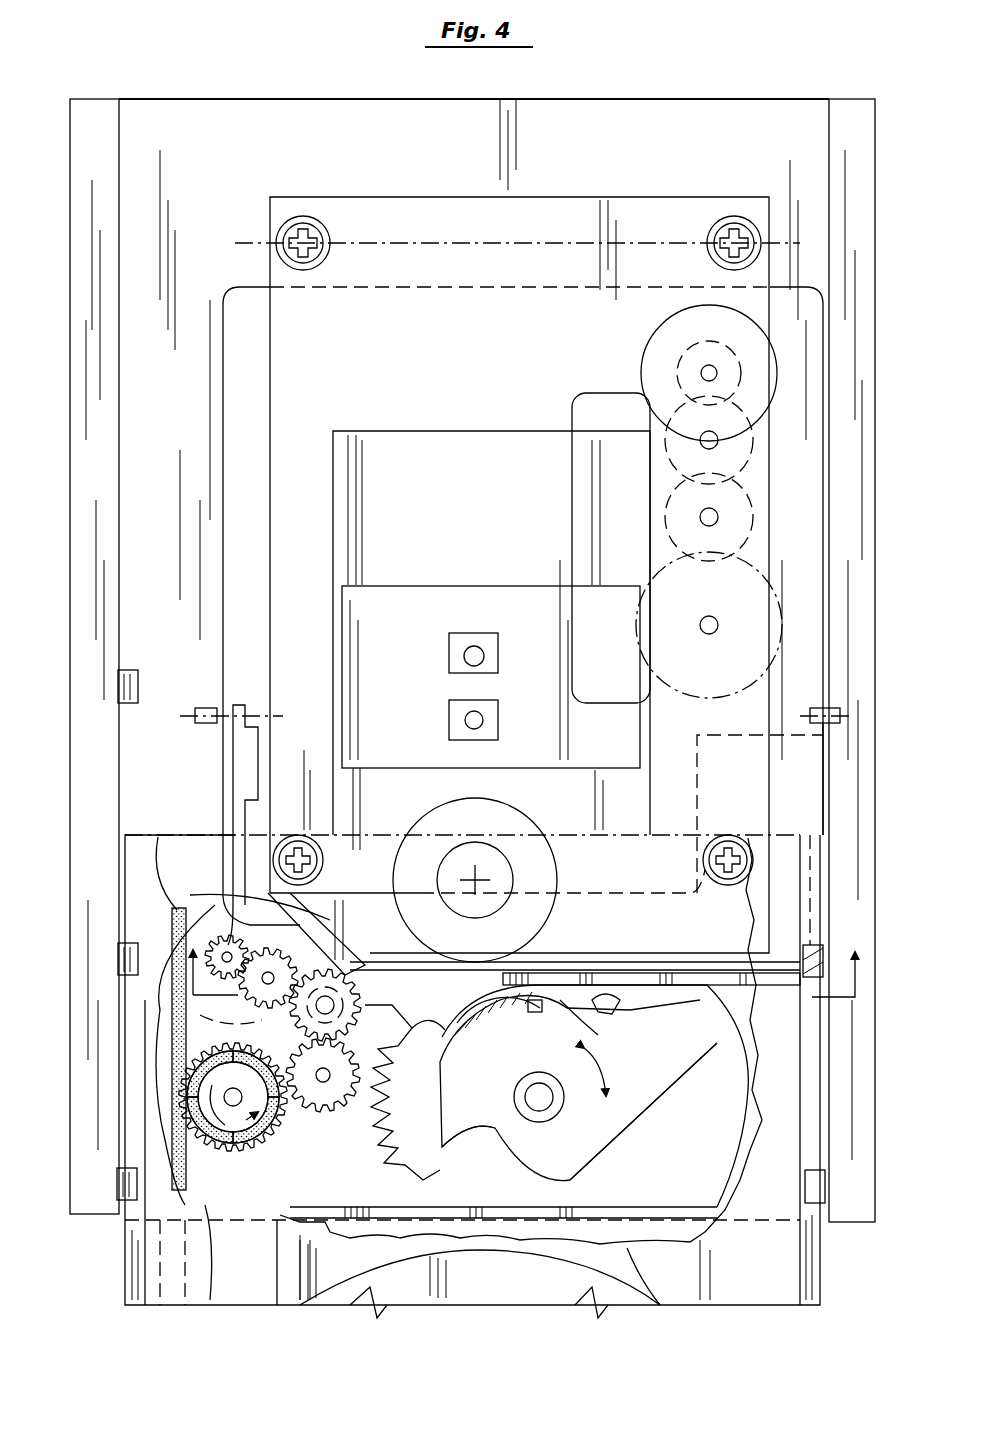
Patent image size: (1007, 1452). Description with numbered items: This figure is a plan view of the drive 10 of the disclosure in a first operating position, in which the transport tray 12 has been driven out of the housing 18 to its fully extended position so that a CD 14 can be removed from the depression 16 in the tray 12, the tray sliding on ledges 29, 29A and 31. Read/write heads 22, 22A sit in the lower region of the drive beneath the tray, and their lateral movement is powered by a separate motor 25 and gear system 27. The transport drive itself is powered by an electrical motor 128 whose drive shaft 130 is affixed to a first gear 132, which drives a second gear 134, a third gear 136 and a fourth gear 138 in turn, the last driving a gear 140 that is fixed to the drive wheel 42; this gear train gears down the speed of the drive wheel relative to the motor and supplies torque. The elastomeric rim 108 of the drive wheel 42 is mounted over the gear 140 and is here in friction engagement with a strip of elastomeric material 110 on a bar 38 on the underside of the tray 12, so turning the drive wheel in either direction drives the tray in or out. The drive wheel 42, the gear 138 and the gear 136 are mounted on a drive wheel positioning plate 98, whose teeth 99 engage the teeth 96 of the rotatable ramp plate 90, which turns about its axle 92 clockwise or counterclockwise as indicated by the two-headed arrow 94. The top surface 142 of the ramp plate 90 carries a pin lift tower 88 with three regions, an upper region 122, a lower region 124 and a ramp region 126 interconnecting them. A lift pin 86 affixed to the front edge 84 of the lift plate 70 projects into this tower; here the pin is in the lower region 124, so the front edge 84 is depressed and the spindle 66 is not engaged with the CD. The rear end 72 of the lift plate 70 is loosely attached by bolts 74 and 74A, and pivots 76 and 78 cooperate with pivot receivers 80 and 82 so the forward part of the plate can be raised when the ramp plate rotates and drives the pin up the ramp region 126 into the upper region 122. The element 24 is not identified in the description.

The drive 10 is at (655, 86).
The transport tray 12 is at (782, 1273).
The compact disk 14 is at (378, 1278).
The CD-shaped depression 16 is at (632, 1292).
The housing 18 is at (96, 140).
The read/write head 22 is at (477, 648).
The read/write head 22A is at (471, 722).
The lower frame 24 is at (125, 1262).
The motor 25 is at (668, 352).
The gear system 27 is at (556, 552).
The ledge 29 is at (119, 943).
The ledge 29A is at (132, 668).
The ledge 31 is at (822, 946).
The bar 38 is at (180, 1081).
The drive wheel 42 is at (222, 1086).
The CD spindle 66 is at (560, 880).
The lift plate 70 is at (420, 404).
The rear end of lift plate 72 is at (448, 197).
The bolt 74 is at (306, 216).
The bolt 74A is at (736, 216).
The pivot 76 is at (206, 708).
The pivot 78 is at (828, 724).
The pivot receiver 80 is at (206, 724).
The pivot receiver 82 is at (832, 708).
The front edge of lift plate 84 is at (560, 973).
The lift plate pin 86 is at (573, 1067).
The pin lift tower 88 is at (602, 1016).
The ramp plate 90 is at (666, 1098).
The axle 92 is at (546, 1110).
The two-headed direction arrow 94 is at (622, 1135).
The teeth 96 is at (382, 1148).
The drive wheel positioning plate 98 is at (361, 1000).
The teeth 99 is at (357, 1030).
The elastomeric rim 108 is at (216, 1152).
The strip of elastomeric material 110 is at (206, 1206).
The upper region 122 is at (448, 1042).
The lower region 124 is at (592, 1040).
The ramp region 126 is at (516, 1030).
The electrical motor 128 is at (190, 1030).
The drive shaft 130 is at (216, 905).
The first gear 132 is at (232, 940).
The second gear 134 is at (312, 920).
The third gear 136 is at (402, 936).
The fourth gear 138 is at (316, 1112).
The gear 140 is at (276, 1150).
The top surface of ramp plate 142 is at (484, 1136).